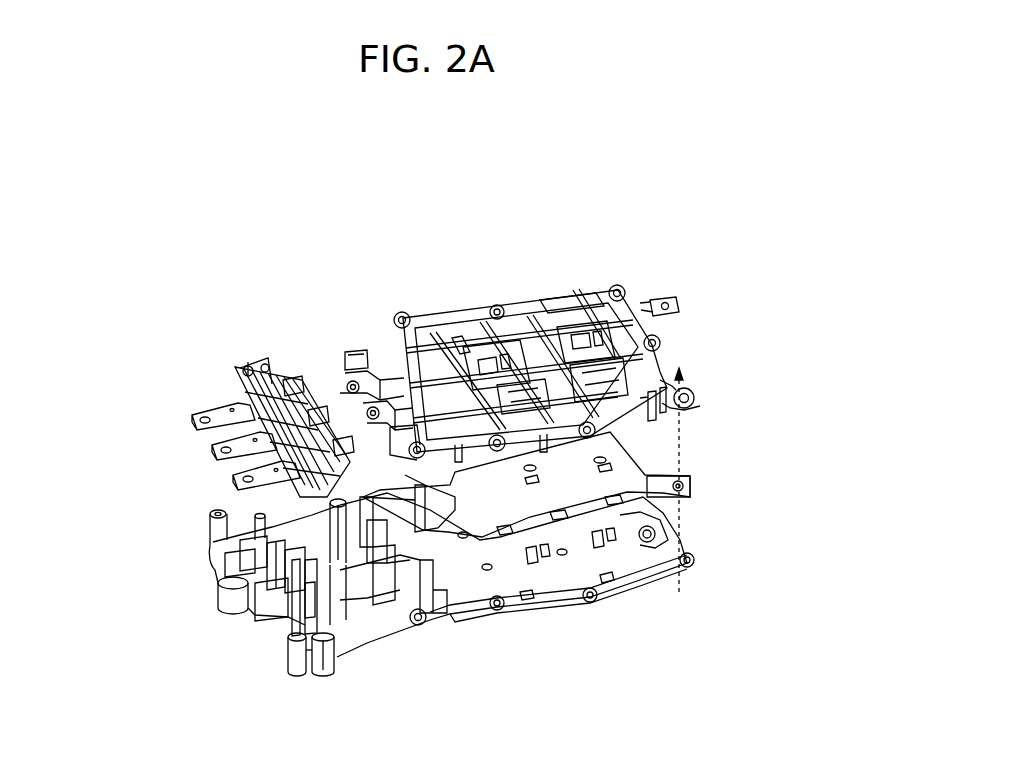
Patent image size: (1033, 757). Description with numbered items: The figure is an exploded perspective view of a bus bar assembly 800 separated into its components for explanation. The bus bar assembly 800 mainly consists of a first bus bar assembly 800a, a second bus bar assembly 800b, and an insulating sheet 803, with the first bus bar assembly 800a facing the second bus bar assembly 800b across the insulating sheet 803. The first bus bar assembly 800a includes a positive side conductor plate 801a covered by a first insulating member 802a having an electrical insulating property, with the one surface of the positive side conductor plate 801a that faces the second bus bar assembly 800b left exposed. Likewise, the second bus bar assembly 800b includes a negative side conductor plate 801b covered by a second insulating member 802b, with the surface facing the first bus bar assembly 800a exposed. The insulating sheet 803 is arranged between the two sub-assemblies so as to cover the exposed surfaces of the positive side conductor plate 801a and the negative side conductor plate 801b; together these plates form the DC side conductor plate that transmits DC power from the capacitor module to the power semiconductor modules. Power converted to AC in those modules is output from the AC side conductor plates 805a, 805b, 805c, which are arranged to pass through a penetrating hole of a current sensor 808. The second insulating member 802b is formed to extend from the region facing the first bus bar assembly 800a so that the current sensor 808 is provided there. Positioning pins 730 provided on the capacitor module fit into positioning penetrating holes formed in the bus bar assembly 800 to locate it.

The bus bar assembly 800 is at (288, 210).
The first bus bar assembly 800a is at (663, 215).
The positive side conductor plate 801a is at (552, 345).
The first insulating member 802a is at (519, 330).
The insulating sheet 803 is at (618, 472).
The second bus bar assembly 800b is at (780, 688).
The negative side conductor plate 801b is at (558, 565).
The second insulating member 802b is at (647, 563).
The AC side conductor plate 805a is at (213, 410).
The AC side conductor plate 805b is at (212, 446).
The AC side conductor plate 805c is at (237, 472).
The current sensor 808 is at (256, 368).
The positioning pin 730 is at (680, 526).